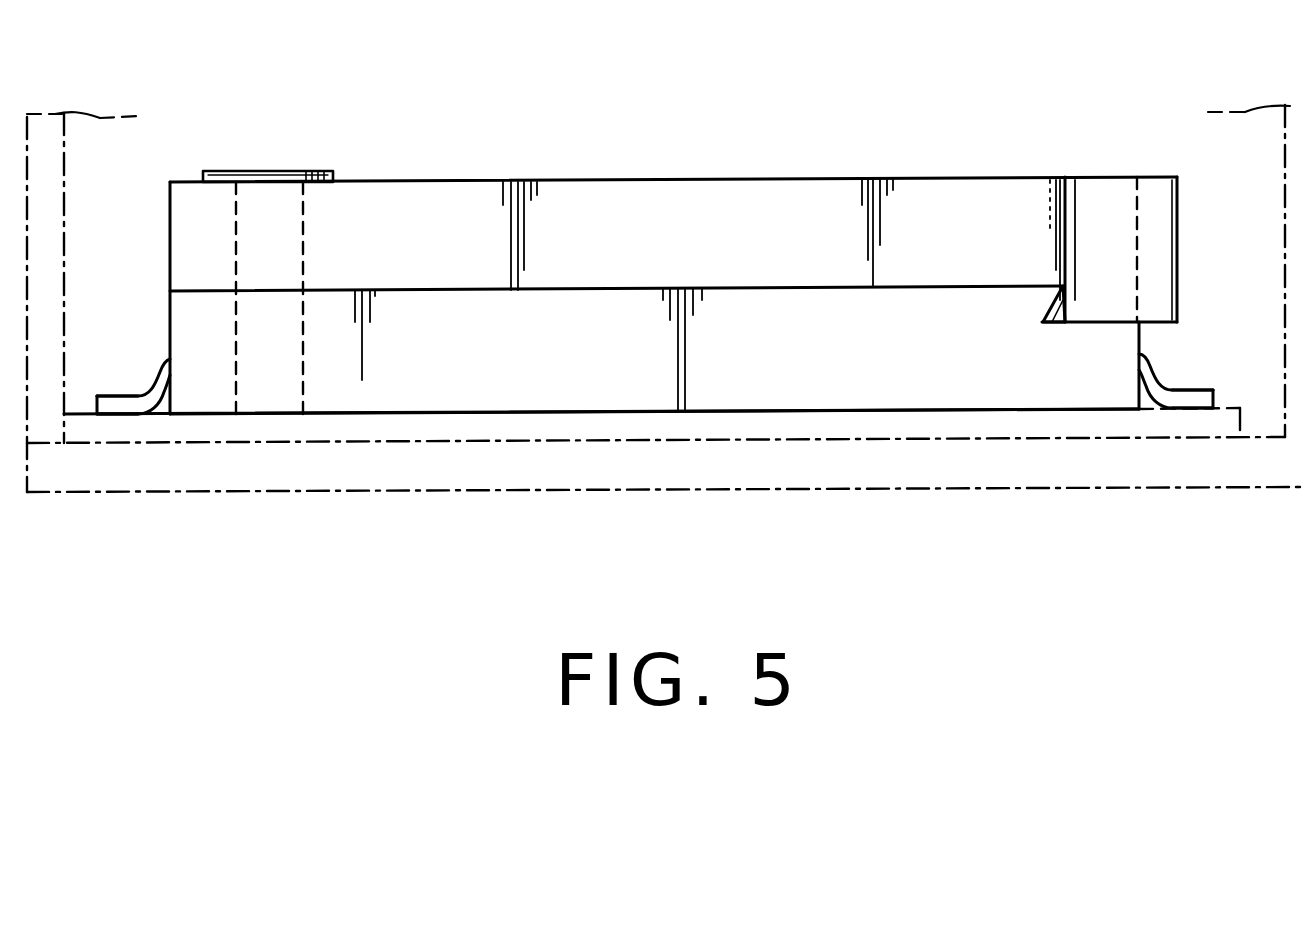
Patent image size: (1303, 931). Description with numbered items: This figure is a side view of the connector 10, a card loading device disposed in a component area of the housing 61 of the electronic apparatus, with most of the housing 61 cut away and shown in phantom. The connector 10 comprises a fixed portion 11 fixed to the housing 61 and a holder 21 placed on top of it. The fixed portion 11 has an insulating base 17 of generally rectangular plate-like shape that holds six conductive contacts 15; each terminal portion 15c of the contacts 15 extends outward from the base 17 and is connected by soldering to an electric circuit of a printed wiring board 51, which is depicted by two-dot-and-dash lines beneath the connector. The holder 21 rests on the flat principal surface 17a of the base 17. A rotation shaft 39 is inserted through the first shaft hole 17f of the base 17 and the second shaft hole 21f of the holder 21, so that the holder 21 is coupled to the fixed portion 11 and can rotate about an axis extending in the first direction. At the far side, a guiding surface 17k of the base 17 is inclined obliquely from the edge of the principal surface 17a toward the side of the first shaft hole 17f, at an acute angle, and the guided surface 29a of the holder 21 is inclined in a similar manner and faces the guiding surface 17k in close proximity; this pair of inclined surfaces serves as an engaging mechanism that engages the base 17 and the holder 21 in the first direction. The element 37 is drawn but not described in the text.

The connector 10 is at (485, 181).
The fixed portion 11 is at (438, 413).
The conductive contacts 15 is at (168, 357).
The terminal portion 15c is at (115, 395).
The insulating base 17 is at (812, 410).
The principal surface 17a is at (768, 287).
The first shaft hole 17f is at (303, 350).
The guiding surface 17k is at (1038, 312).
The holder 21 is at (633, 180).
The second shaft hole 21f is at (298, 262).
The guided surface 29a is at (1062, 300).
The block 37 is at (1157, 195).
The rotation shaft 39 is at (266, 217).
The printed wiring board 51 is at (1038, 425).
The housing 61 is at (148, 493).